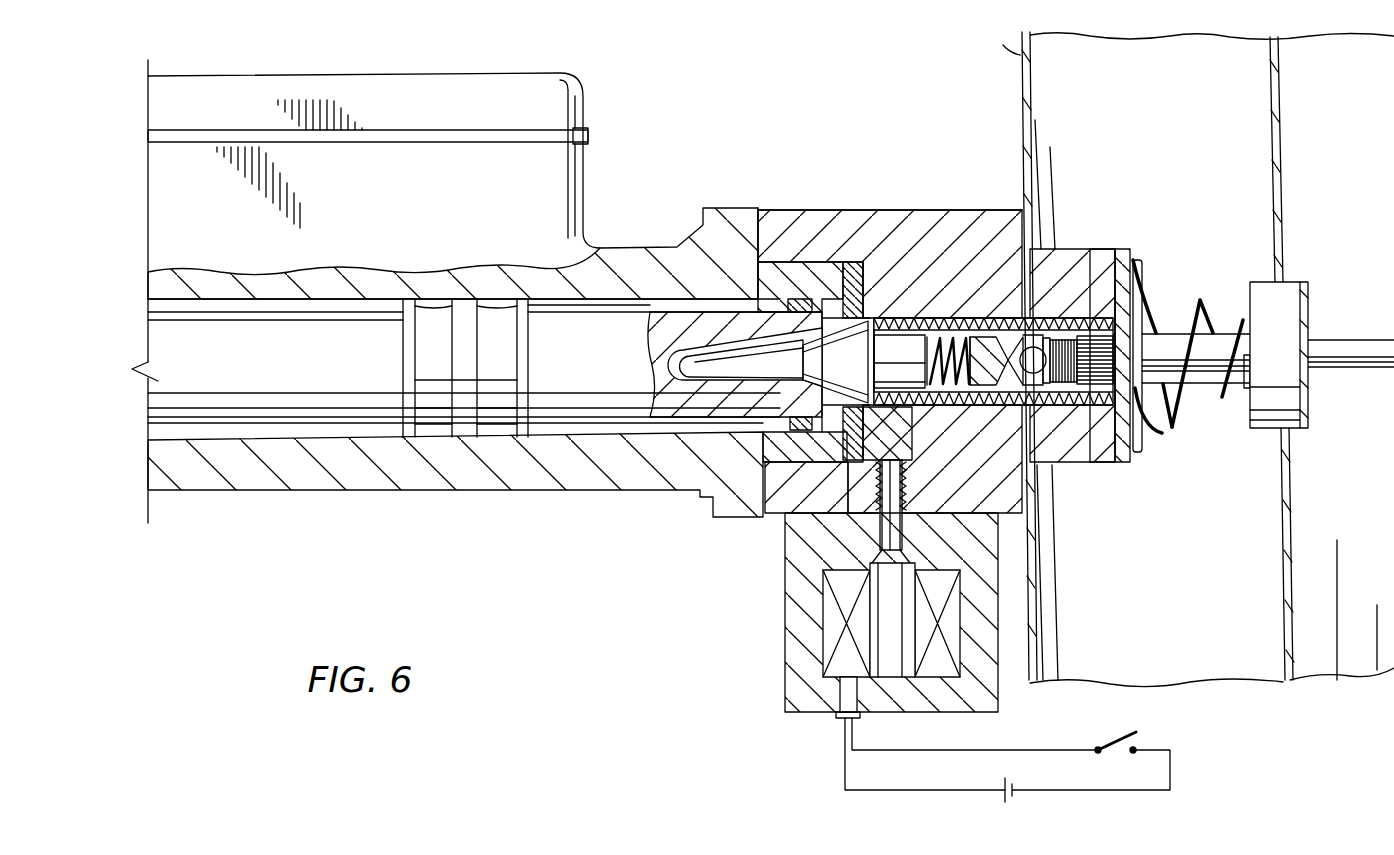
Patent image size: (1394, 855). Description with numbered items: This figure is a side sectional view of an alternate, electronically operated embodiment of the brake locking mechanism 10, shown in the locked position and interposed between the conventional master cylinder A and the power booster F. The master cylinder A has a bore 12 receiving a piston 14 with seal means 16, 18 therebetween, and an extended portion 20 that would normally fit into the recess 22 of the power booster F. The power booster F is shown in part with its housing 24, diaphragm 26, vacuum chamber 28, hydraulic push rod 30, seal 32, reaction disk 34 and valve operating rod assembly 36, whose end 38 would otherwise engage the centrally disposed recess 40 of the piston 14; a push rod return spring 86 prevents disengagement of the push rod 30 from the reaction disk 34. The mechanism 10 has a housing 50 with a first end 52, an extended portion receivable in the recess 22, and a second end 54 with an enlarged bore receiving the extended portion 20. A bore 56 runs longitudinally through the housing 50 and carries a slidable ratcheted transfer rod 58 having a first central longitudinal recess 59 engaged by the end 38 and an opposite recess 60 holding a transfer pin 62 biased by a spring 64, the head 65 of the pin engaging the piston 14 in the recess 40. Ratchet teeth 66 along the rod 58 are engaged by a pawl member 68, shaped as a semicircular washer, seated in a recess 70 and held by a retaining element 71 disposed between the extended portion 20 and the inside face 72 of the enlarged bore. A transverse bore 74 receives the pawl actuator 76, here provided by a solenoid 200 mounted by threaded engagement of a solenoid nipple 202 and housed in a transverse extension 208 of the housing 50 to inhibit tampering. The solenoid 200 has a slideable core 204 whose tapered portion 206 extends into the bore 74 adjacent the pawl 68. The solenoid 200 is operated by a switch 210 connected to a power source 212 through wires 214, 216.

The master cylinder A is at (572, 167).
The power booster F is at (1001, 53).
The locking mechanism 10 is at (805, 210).
The bore 12 is at (603, 430).
The piston 14 is at (198, 388).
The seal means 16 is at (462, 299).
The seal means 18 is at (807, 299).
The extended portion 20 is at (772, 282).
The recess 22 is at (1108, 258).
The housing 24 is at (1020, 107).
The diaphragm 26 is at (1288, 563).
The vacuum chamber 28 is at (1149, 580).
The hydraulic push rod 30 is at (1166, 334).
The seal 32 is at (1144, 408).
The reaction disk 34 is at (1310, 407).
The valve operating rod assembly 36 is at (1355, 340).
The end 38 is at (1033, 347).
The recess 40 is at (698, 352).
The housing 50 is at (873, 222).
The first end 52 is at (1068, 262).
The second end 54 is at (775, 218).
The bore 56 is at (936, 335).
The ratcheted transfer rod 58 is at (1003, 405).
The first central longitudinal recess 59 is at (1065, 338).
The central longitudinal recess 60 is at (970, 335).
The transfer pin 62 is at (885, 361).
The spring 64 is at (968, 405).
The head 65 is at (813, 358).
The ratchet teeth 66 is at (1045, 405).
The pawl member 68 is at (905, 437).
The recess 70 is at (910, 413).
The retaining element 71 is at (853, 262).
The inside face 72 is at (860, 300).
The transverse bore 74 is at (928, 470).
The pawl actuator 76 is at (860, 486).
The push rod return spring 86 is at (1185, 405).
The solenoid 200 is at (830, 607).
The solenoid nipple 202 is at (930, 492).
The core 204 is at (858, 556).
The tapered portion 206 is at (912, 517).
The transverse extension 208 is at (975, 702).
The switch 210 is at (1100, 745).
The power source 212 is at (1003, 786).
The wire 214 is at (919, 790).
The wire 216 is at (919, 750).